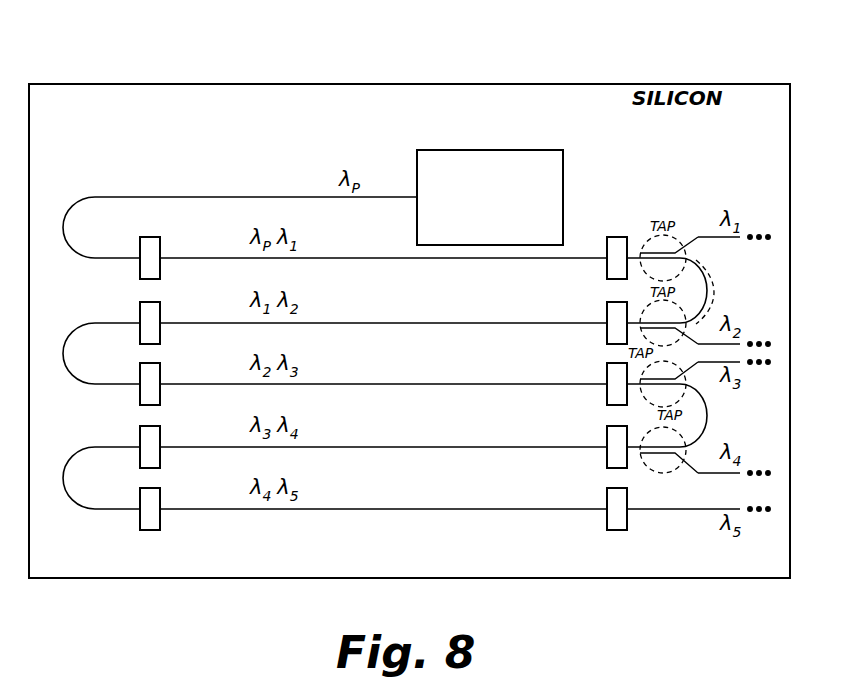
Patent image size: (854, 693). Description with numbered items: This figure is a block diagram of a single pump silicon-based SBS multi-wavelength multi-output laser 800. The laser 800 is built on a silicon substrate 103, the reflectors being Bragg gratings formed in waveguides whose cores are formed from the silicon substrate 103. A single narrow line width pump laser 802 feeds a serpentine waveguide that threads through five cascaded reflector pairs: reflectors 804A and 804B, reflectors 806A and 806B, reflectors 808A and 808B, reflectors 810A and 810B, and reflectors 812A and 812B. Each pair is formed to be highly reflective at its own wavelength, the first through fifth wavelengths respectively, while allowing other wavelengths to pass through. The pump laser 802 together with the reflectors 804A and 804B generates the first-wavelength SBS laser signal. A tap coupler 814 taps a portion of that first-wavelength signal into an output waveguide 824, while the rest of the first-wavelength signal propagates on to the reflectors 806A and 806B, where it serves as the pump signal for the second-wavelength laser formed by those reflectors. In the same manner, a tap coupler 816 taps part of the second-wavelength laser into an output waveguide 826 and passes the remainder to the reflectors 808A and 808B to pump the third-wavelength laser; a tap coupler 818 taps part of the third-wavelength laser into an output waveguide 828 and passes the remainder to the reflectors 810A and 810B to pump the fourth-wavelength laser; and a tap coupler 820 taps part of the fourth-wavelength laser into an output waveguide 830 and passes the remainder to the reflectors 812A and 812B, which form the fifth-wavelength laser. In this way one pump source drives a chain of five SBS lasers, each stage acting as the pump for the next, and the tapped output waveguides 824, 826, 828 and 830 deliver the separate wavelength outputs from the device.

The single pump silicon-based SBS multi-wavelength multi-output laser 800 is at (618, 70).
The pump laser 802 is at (563, 163).
The reflector 804A is at (160, 247).
The reflector 804B is at (624, 237).
The reflector 806A is at (160, 312).
The reflector 806B is at (608, 303).
The reflector 808A is at (160, 373).
The reflector 808B is at (608, 365).
The reflector 810A is at (160, 436).
The reflector 810B is at (608, 428).
The reflector 812A is at (160, 498).
The reflector 812B is at (608, 490).
The tap coupler 814 is at (690, 249).
The tap coupler 816 is at (719, 289).
The tap coupler 818 is at (692, 370).
The tap coupler 820 is at (668, 474).
The output waveguide 824 is at (718, 237).
The output waveguide 826 is at (717, 344).
The output waveguide 828 is at (707, 363).
The output waveguide 830 is at (728, 474).
The silicon substrate 103 is at (397, 565).